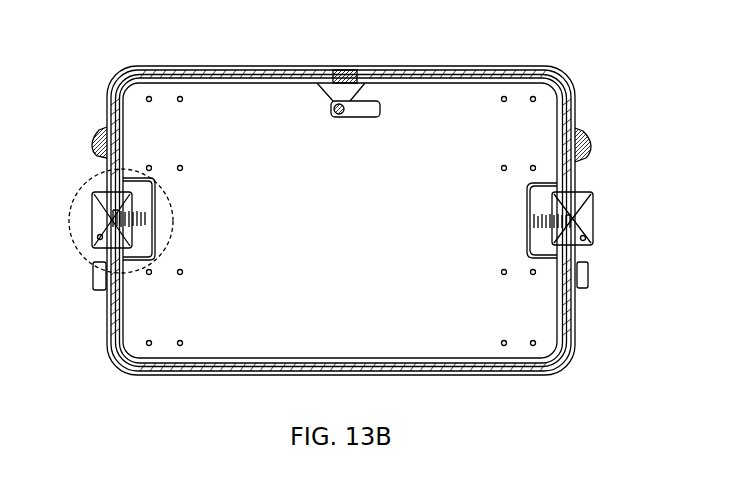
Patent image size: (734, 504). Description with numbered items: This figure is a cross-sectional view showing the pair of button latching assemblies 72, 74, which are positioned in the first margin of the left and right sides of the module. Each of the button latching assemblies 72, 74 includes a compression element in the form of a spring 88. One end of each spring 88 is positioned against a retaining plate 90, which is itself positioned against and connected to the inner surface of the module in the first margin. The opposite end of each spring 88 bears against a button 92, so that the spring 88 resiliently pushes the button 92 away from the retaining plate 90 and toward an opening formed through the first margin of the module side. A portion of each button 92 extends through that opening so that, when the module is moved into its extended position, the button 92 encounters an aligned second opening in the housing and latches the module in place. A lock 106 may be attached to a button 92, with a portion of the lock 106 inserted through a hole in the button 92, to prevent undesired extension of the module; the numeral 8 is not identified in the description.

The latch assembly 8 is at (72, 199).
The button latching assembly 72 is at (97, 233).
The button latching assembly 74 is at (593, 200).
The spring 88 is at (530, 220).
The retaining plate 90 is at (527, 203).
The button 92 is at (586, 234).
The lock 106 is at (589, 278).